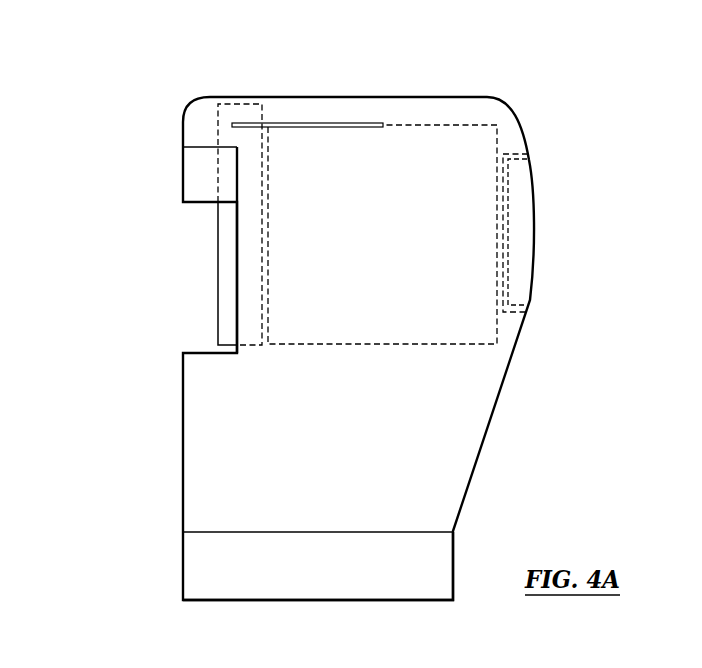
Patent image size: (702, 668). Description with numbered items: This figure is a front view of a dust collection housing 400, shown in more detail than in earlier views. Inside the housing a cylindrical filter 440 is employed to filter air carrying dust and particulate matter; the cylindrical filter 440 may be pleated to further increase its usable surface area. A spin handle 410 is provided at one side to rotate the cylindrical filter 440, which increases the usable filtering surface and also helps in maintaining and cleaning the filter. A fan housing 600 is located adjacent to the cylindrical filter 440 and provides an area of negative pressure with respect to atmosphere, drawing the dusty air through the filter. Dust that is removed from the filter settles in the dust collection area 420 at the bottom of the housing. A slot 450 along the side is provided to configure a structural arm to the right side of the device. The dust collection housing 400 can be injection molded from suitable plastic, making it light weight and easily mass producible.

The dust collection housing 400 is at (521, 64).
The spin handle 410 is at (522, 185).
The dust collection area 420 is at (437, 513).
The cylindrical filter 440 is at (382, 315).
The slot 450 is at (207, 266).
The fan housing 600 is at (218, 139).